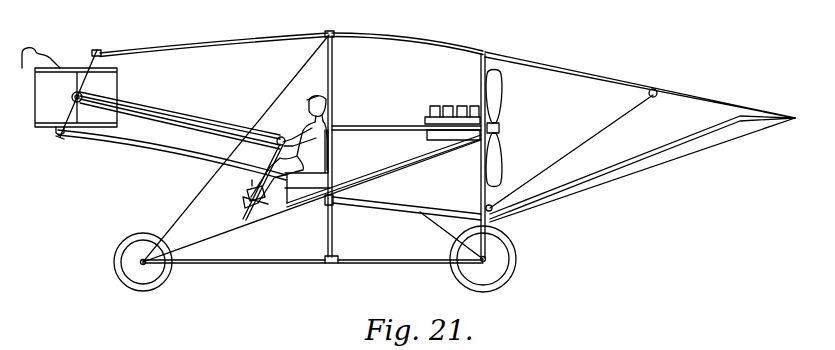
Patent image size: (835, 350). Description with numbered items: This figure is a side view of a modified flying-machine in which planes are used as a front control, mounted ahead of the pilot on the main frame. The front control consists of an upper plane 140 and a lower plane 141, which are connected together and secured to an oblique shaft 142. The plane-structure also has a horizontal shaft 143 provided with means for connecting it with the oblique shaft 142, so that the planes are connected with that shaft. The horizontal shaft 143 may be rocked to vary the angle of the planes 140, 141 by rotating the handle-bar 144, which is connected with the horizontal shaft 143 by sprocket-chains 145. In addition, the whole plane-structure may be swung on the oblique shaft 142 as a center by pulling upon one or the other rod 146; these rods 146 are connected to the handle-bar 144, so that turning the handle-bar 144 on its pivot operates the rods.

The upper plane 140 is at (103, 61).
The lower plane 141 is at (60, 128).
The oblique shaft 142 is at (88, 80).
The horizontal shaft 143 is at (70, 97).
The handle-bar 144 is at (280, 137).
The sprocket-chains 145 is at (202, 115).
The rod 146 is at (217, 127).